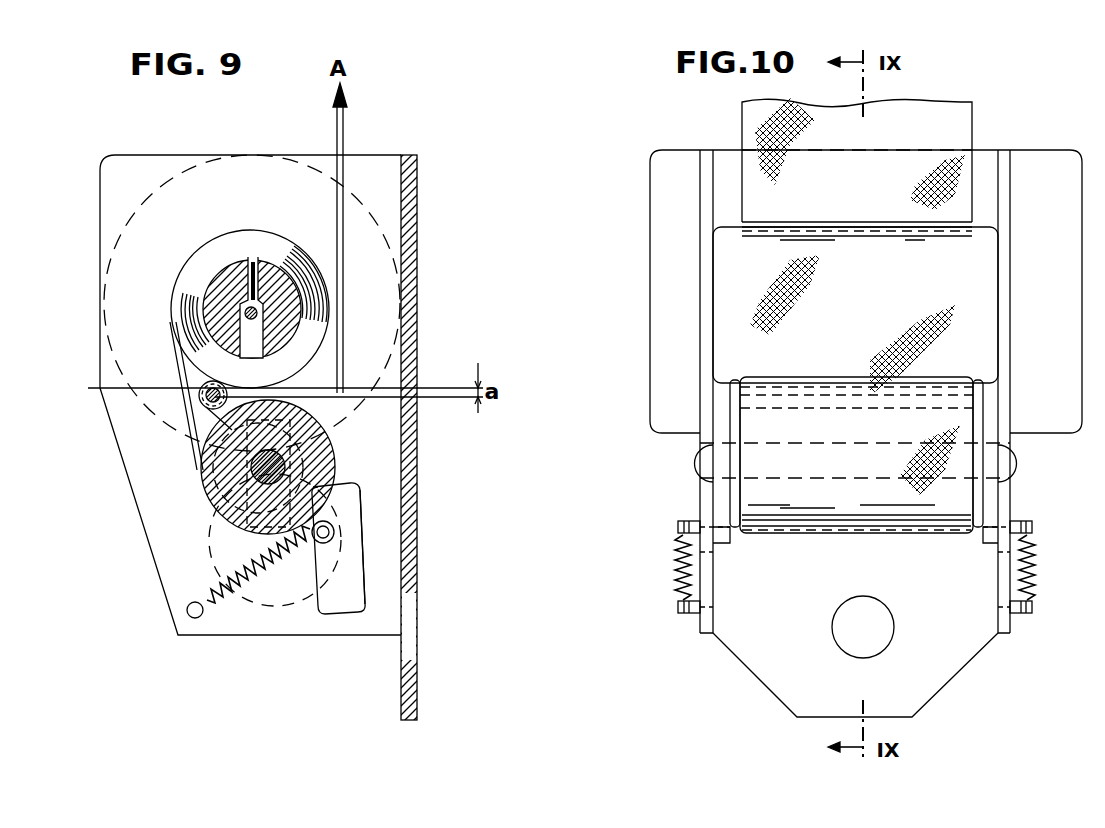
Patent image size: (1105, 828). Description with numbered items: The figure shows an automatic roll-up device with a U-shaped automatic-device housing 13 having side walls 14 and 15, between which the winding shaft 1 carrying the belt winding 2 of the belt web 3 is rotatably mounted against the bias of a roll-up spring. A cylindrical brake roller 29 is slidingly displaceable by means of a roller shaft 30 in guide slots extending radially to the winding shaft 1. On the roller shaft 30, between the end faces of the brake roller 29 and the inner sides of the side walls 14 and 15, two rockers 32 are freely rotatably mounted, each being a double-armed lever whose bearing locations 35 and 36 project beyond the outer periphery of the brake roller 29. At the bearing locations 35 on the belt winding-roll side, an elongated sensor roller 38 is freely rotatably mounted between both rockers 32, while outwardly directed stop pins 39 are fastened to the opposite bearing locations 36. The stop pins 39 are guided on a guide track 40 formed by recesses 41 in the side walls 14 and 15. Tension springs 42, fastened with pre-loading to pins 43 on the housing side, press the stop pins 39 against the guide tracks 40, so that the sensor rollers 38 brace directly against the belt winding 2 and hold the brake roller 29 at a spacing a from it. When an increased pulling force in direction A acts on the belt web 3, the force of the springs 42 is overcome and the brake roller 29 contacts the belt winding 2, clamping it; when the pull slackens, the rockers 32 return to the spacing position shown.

In FIG. 9, the winding shaft 1 is at (285, 267).
In FIG. 9, the belt winding 2 is at (212, 253).
In FIG. 10, the belt winding 2 is at (727, 298).
In FIG. 9, the belt web 3 is at (344, 128).
In FIG. 10, the belt web 3 is at (962, 127).
In FIG. 9, the automatic-device housing 13 is at (418, 214).
In FIG. 10, the automatic-device housing 13 is at (752, 679).
In FIG. 9, the side wall 14 is at (265, 625).
In FIG. 10, the side wall 14 is at (700, 628).
In FIG. 10, the side wall 15 is at (1010, 628).
In FIG. 9, the brake roller 29 is at (338, 452).
In FIG. 10, the brake roller 29 is at (977, 507).
In FIG. 9, the roller shaft 30 is at (262, 472).
In FIG. 10, the roller shaft 30 is at (1016, 460).
In FIG. 9, the rocker 32 is at (205, 535).
In FIG. 10, the rocker 32 is at (735, 460).
In FIG. 9, the bearing location 35 is at (205, 405).
In FIG. 9, the bearing location 36 is at (335, 512).
In FIG. 9, the sensor roller 38 is at (199, 394).
In FIG. 9, the stop pin 39 is at (340, 533).
In FIG. 10, the stop pin 39 is at (683, 527).
In FIG. 9, the guide track 40 is at (325, 597).
In FIG. 9, the recess 41 is at (352, 580).
In FIG. 9, the tension spring 42 is at (232, 595).
In FIG. 10, the tension spring 42 is at (678, 570).
In FIG. 10, the pin 43 is at (683, 607).